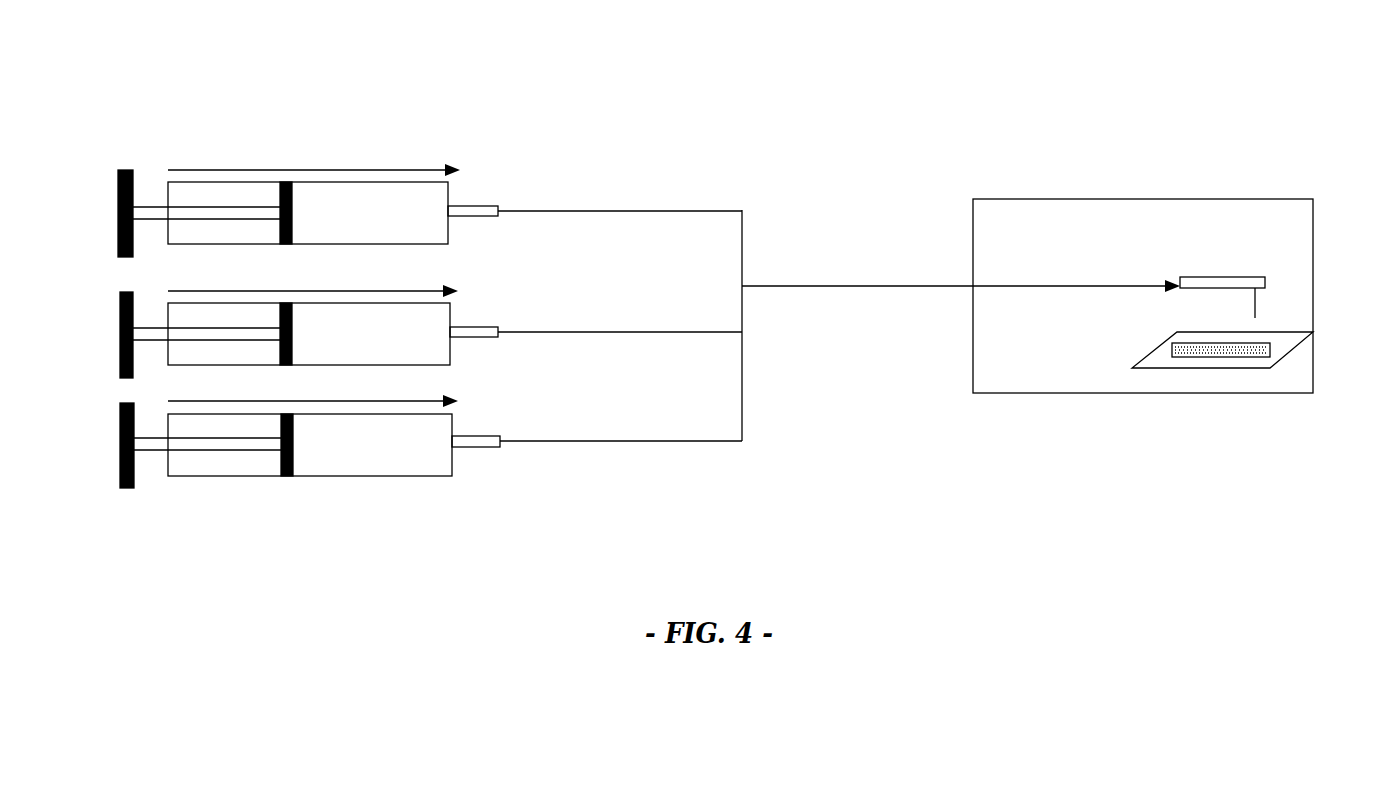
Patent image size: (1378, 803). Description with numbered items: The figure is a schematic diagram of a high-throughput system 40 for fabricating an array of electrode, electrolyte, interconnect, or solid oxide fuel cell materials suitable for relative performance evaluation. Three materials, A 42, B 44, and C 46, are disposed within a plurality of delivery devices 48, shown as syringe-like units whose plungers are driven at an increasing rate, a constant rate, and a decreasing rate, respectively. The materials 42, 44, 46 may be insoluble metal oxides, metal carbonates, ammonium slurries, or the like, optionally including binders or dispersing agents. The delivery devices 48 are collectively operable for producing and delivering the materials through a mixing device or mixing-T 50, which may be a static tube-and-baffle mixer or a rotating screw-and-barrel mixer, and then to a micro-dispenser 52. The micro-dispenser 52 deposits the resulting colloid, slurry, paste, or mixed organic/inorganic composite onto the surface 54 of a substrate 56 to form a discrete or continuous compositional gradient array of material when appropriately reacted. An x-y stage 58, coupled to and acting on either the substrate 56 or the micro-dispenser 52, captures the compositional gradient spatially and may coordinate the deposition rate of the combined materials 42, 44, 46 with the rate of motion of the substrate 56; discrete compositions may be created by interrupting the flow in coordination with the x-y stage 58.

The system 40 is at (973, 83).
The material A 42 is at (452, 192).
The material B 44 is at (453, 315).
The material C 46 is at (454, 425).
The delivery devices 48 is at (120, 192).
The mixing-T 50 is at (840, 268).
The micro-dispenser 52 is at (1293, 234).
The surface 54 is at (1280, 323).
The substrate 56 is at (1285, 352).
The x-y stage 58 is at (1038, 199).